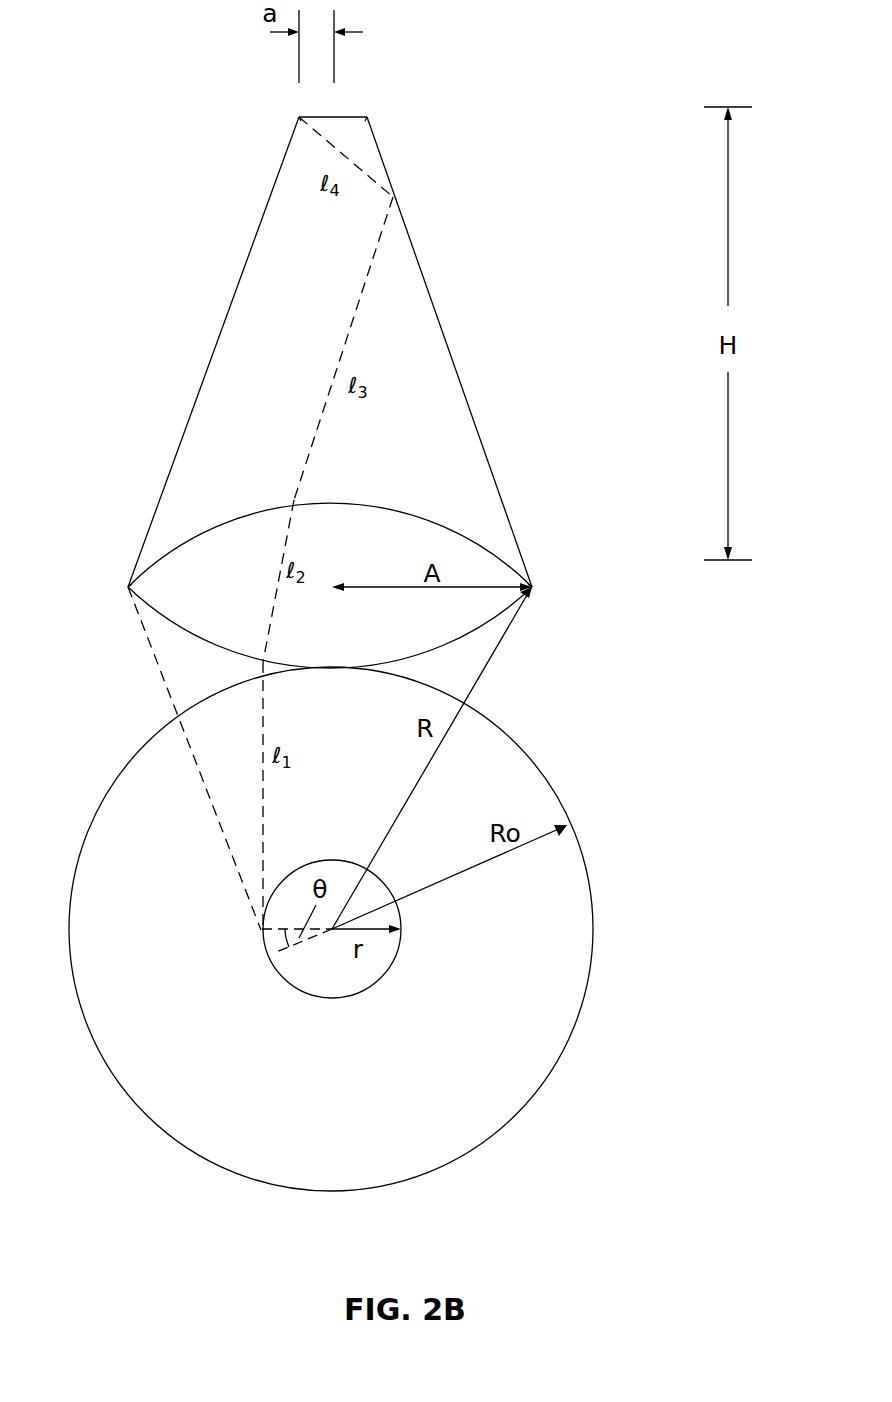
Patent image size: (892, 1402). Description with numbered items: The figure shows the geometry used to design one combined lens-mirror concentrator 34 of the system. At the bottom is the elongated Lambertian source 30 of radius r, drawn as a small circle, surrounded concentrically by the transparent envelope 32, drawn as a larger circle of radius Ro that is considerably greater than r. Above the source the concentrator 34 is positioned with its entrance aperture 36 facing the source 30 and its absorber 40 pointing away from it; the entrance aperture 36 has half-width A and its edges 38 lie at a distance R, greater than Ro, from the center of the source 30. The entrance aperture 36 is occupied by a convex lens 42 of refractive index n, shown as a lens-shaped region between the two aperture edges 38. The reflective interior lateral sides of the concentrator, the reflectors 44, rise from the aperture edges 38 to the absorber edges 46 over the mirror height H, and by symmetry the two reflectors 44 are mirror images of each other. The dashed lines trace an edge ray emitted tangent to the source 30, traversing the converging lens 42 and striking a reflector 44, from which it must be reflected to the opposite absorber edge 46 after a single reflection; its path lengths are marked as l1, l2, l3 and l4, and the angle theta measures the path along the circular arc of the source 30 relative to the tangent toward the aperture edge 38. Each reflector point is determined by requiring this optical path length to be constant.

The source 30 is at (347, 996).
The transparent envelope 32 is at (492, 1135).
The non-imaging concentrator 34 is at (320, 315).
The entrance aperture 36 is at (377, 588).
The entrance aperture edge 38 is at (128, 587).
The absorber 40 is at (344, 117).
The convex lens 42 is at (330, 545).
The reflector 44 is at (175, 460).
The absorber edge 46 is at (297, 117).